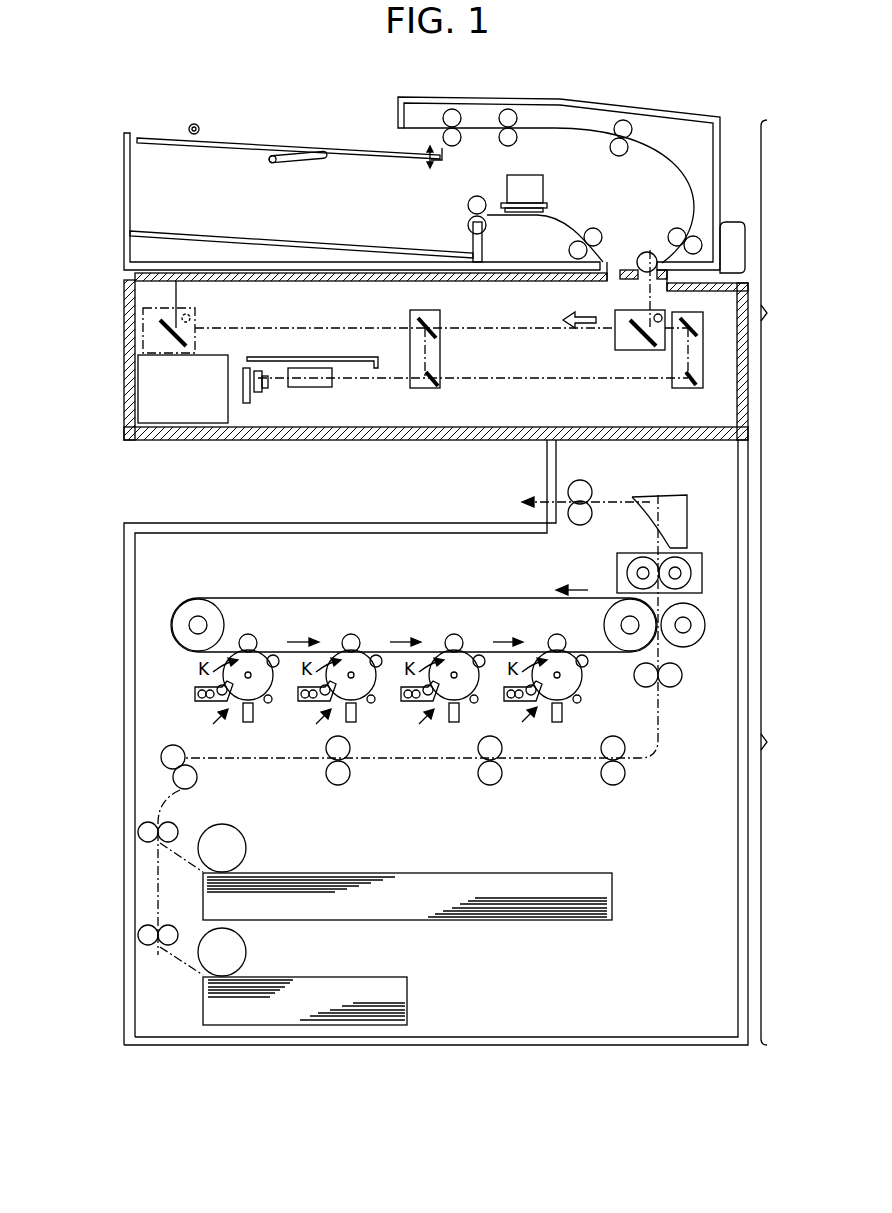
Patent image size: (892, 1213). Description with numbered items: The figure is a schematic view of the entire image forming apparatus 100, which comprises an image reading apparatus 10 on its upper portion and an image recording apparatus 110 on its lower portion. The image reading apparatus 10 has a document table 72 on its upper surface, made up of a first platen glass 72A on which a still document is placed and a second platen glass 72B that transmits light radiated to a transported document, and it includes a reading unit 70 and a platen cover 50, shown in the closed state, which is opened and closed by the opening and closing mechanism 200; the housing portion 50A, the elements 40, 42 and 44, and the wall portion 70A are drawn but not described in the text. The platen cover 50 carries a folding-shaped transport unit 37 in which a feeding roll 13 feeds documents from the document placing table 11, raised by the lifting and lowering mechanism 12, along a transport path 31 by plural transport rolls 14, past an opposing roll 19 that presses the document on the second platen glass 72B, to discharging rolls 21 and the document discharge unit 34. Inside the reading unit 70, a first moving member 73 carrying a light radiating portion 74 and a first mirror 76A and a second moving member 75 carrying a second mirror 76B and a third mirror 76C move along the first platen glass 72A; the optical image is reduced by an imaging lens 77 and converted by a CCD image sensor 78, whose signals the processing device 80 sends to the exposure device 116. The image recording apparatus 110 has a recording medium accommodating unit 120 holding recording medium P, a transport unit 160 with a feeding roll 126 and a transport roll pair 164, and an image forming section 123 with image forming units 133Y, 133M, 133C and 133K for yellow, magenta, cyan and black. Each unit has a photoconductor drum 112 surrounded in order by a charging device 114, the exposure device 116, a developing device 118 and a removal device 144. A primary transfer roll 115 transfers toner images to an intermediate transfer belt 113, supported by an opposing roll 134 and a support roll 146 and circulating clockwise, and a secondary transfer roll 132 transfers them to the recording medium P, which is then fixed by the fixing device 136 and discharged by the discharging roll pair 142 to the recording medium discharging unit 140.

The image forming apparatus 100 is at (747, 99).
The image reading apparatus 10 is at (783, 582).
The platen cover 50 is at (125, 207).
The reading device housing 50A is at (720, 163).
The document placing table 11 is at (340, 145).
The lifting and lowering mechanism 12 is at (309, 163).
The feeding roll 13 is at (398, 112).
The transport rolls 14 is at (452, 110).
The transport unit 37 is at (471, 107).
The transport path 31 is at (573, 118).
The document discharge unit 34 is at (258, 240).
The discharging rolls 21 is at (469, 223).
The sensor 42 is at (510, 187).
The reading unit 40 is at (551, 176).
The sensor base 44 is at (547, 207).
The opposing roll 19 is at (640, 256).
The light radiating portion 74 is at (652, 257).
The opening and closing mechanism 200 is at (748, 232).
The top wall of exposure device 70A is at (748, 275).
The reading unit 70 is at (125, 387).
The first platen glass 72A is at (310, 281).
The document table 72 is at (502, 282).
The second platen glass 72B is at (634, 281).
The first moving member 73 is at (195, 340).
The second moving member 75 is at (440, 318).
The first mirror 76A is at (585, 313).
The second mirror 76B is at (703, 313).
The third mirror 76C is at (695, 388).
The imaging lens 77 is at (320, 390).
The CCD image sensor 78 is at (255, 395).
The processing device 80 is at (145, 440).
The recording medium discharging unit 140 is at (468, 523).
The discharging roll pair 142 is at (585, 515).
The fixing device 136 is at (617, 574).
The opposing roll 134 is at (613, 617).
The intermediate transfer belt 113 is at (372, 597).
The primary transfer roll 115 is at (246, 635).
The photoconductor drum 112 is at (270, 655).
The removal device 144 is at (597, 688).
The support roll 146 is at (182, 623).
The secondary transfer roll 132 is at (690, 648).
The image forming section 123 is at (162, 673).
The transport roll pair 164 is at (183, 770).
The developing device 118 is at (210, 703).
The charging device 114 is at (270, 703).
The image forming unit 133Y is at (210, 735).
The image forming unit 133M is at (300, 735).
The image forming unit 133C is at (413, 735).
The image forming unit 133K is at (528, 733).
The exposure device 116 is at (248, 724).
The feeding roll 126 is at (240, 840).
The recording medium P is at (362, 873).
The recording medium accommodating unit 120 is at (612, 892).
The transport unit 160 is at (141, 958).
The image recording apparatus 110 is at (468, 742).